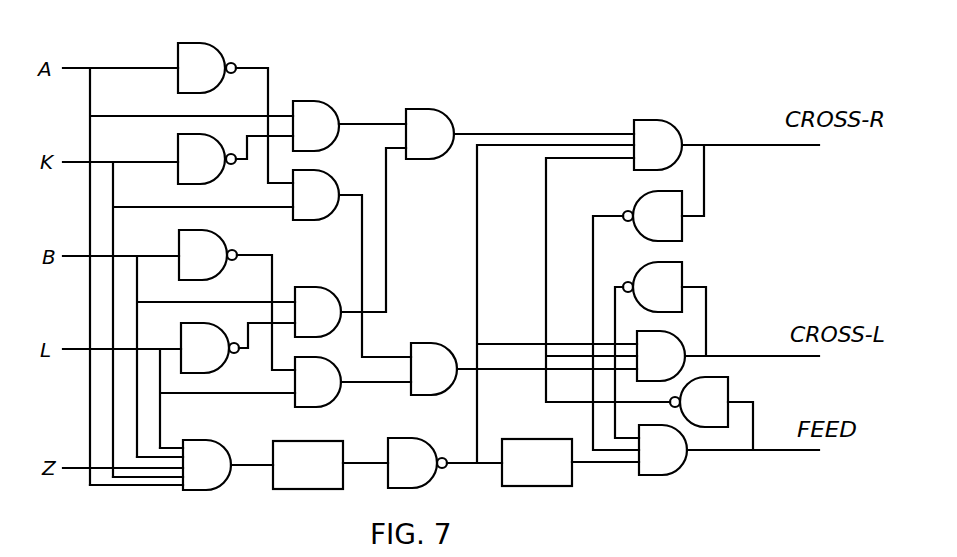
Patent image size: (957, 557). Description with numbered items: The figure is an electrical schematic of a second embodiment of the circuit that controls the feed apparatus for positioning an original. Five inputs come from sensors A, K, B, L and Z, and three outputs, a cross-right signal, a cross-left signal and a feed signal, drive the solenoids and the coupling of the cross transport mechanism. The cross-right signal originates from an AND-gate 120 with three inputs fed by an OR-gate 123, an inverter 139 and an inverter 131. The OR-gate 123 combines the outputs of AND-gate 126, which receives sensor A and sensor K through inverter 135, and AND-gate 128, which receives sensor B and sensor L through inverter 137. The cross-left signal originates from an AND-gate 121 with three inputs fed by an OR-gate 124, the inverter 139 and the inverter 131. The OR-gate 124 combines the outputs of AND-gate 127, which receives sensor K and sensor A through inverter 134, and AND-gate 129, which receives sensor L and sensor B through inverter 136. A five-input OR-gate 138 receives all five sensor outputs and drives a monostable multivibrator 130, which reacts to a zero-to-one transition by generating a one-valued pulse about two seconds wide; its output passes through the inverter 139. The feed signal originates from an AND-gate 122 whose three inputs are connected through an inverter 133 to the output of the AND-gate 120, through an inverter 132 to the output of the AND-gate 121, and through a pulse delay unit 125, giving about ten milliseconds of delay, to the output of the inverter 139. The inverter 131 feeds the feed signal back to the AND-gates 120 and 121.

The AND-gate 120 is at (660, 126).
The AND-gate 121 is at (664, 340).
The AND-gate 122 is at (668, 470).
The OR-gate 123 is at (432, 114).
The OR-gate 124 is at (428, 346).
The pulse delay unit 125 is at (518, 442).
The AND-gate 126 is at (322, 108).
The AND-gate 127 is at (322, 177).
The AND-gate 128 is at (312, 290).
The AND-gate 129 is at (312, 360).
The monostable multivibrator 130 is at (318, 444).
The inverter 131 is at (725, 383).
The inverter 132 is at (653, 266).
The inverter 133 is at (651, 198).
The inverter 134 is at (205, 47).
The inverter 135 is at (200, 142).
The inverter 136 is at (203, 237).
The inverter 137 is at (205, 335).
The OR-gate 138 is at (208, 445).
The inverter 139 is at (412, 443).